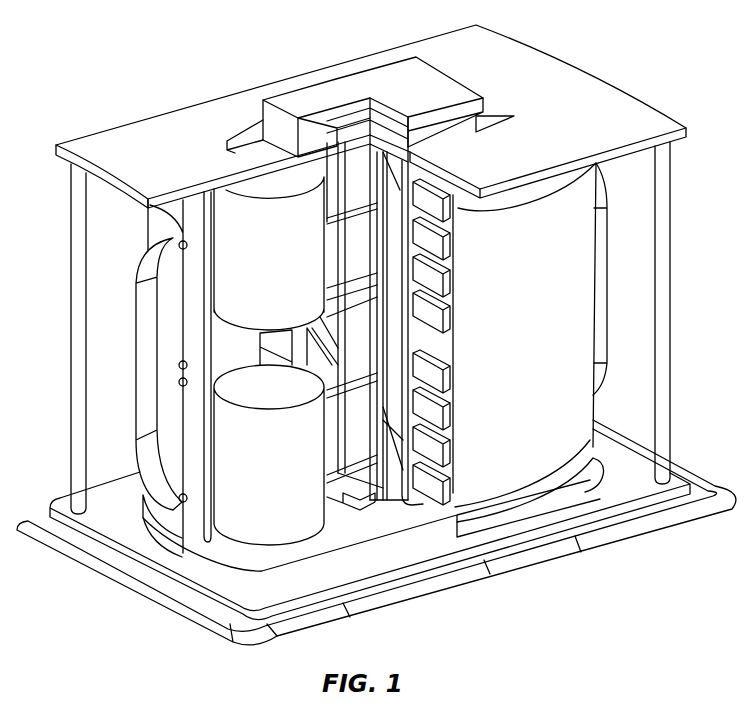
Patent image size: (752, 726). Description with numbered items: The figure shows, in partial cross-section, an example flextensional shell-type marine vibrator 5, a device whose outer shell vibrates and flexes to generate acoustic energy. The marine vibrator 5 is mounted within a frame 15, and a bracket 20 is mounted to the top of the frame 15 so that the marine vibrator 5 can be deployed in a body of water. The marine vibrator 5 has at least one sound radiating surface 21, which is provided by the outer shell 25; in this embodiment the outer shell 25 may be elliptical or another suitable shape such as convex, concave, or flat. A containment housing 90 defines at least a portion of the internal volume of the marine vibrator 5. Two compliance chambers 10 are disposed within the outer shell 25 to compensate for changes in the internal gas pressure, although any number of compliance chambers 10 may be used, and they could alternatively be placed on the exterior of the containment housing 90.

The flextensional shell-type marine vibrator 5 is at (620, 305).
The compliance chamber 10 is at (334, 261).
The frame 15 is at (545, 556).
The bracket 20 is at (380, 80).
The sound radiating surface 21 is at (560, 273).
The outer shell 25 is at (572, 385).
The containment housing 90 is at (621, 95).